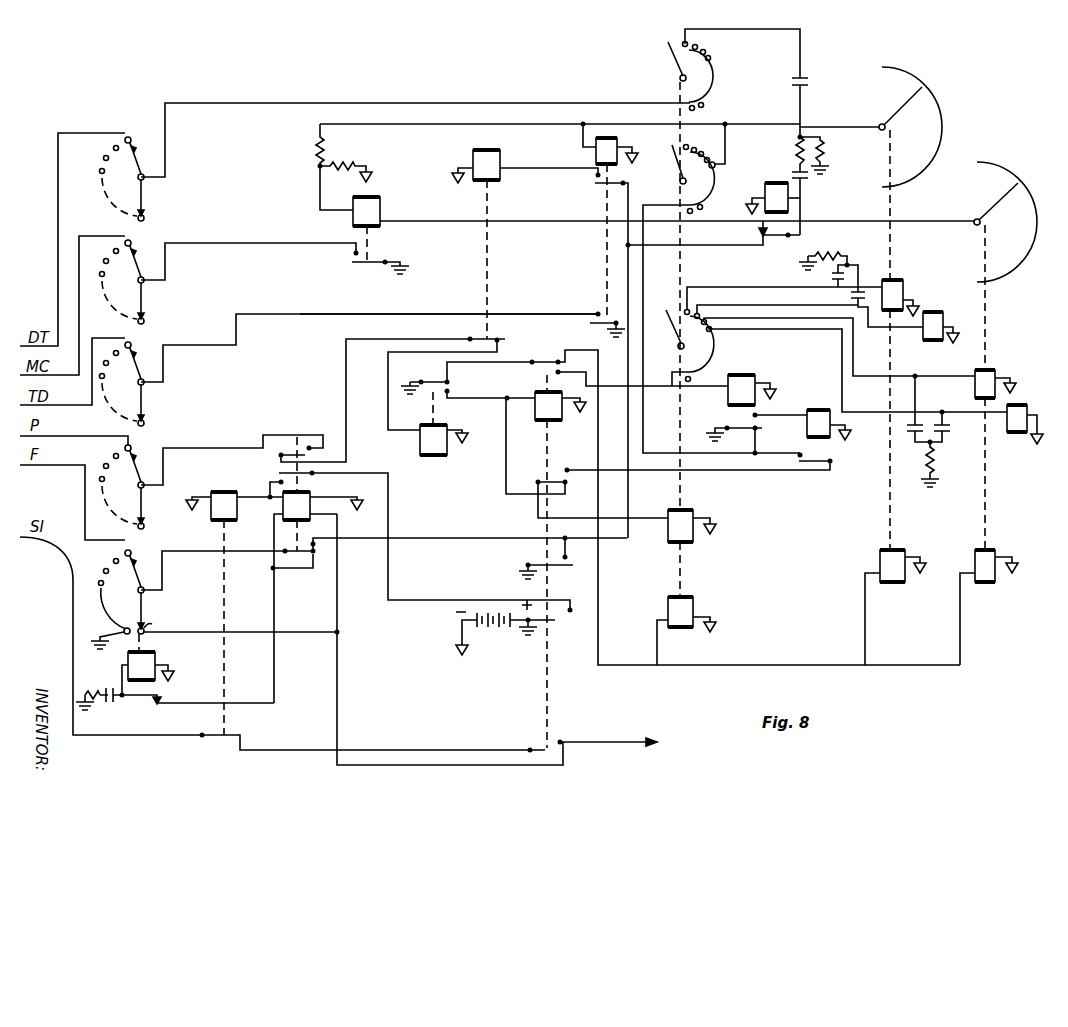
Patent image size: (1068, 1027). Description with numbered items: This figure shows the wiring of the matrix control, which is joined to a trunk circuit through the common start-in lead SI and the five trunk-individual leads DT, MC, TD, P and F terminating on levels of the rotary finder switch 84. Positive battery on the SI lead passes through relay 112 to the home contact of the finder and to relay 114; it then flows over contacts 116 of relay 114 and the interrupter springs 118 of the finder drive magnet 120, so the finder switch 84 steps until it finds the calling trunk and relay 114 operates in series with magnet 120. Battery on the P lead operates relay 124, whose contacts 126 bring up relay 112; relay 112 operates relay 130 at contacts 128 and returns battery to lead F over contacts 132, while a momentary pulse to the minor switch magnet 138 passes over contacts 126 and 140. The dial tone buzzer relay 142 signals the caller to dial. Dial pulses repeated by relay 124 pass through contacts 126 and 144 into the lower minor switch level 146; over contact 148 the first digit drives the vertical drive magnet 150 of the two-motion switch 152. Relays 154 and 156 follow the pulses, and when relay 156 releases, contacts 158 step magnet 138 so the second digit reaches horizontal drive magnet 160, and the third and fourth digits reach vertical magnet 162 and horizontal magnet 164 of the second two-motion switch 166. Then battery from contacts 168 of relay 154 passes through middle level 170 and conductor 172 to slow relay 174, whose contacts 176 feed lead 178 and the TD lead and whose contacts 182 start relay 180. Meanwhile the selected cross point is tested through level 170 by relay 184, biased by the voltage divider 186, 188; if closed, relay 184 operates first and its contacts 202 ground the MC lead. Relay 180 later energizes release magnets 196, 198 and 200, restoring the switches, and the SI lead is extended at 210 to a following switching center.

The rotary finder switch 84 is at (151, 118).
The relay 112 is at (547, 414).
The relay 114 is at (282, 512).
The contacts of relay 114 116 is at (305, 556).
The interrupter springs 118 is at (142, 702).
The finder drive magnet 120 is at (155, 660).
The relay 124 is at (434, 446).
The contacts of relay 124 126 is at (452, 385).
The contacts of relay 112 128 is at (561, 622).
The relay 130 is at (226, 490).
The contacts of relay 112 132 is at (570, 567).
The minor switch motor magnet 138 is at (688, 542).
The contacts of relay 112 140 is at (578, 486).
The dial tone buzzer relay 142 is at (775, 174).
The contacts of relay 112 144 is at (550, 363).
The lower level of minor switch banks 146 is at (711, 332).
The contact of bank level 146 148 is at (688, 303).
The vertical drive magnet 150 is at (904, 291).
The two-motion switch 152 is at (903, 106).
The relay 154 is at (746, 378).
The relay 156 is at (817, 410).
The contacts 158 is at (808, 466).
The horizontal drive magnet 160 is at (944, 318).
The vertical magnet 162 is at (985, 376).
The horizontal magnet 164 is at (1017, 432).
The second two-motion switch 166 is at (1003, 197).
The contacts of relay 154 168 is at (745, 432).
The middle level of minor switch 170 is at (711, 181).
The conductor 172 is at (722, 143).
The relay 174 is at (616, 139).
The contacts of relay 174 176 is at (600, 315).
The lead 178 is at (455, 316).
The relay 180 is at (490, 150).
The contacts of relay 174 182 is at (592, 178).
The relay 184 is at (372, 205).
The voltage divider resistor 186 is at (318, 148).
The voltage divider resistor 188 is at (342, 168).
The release magnet 196 is at (690, 607).
The release magnet 198 is at (893, 582).
The release magnet 200 is at (989, 607).
The contacts of relay 184 202 is at (352, 258).
The start-in lead extension 210 is at (630, 748).